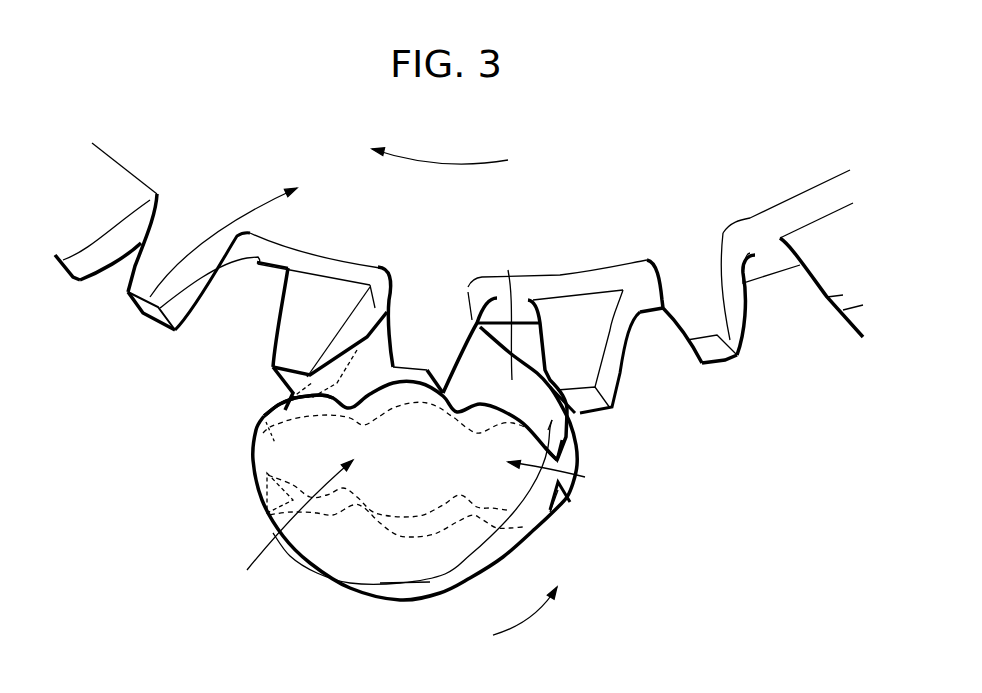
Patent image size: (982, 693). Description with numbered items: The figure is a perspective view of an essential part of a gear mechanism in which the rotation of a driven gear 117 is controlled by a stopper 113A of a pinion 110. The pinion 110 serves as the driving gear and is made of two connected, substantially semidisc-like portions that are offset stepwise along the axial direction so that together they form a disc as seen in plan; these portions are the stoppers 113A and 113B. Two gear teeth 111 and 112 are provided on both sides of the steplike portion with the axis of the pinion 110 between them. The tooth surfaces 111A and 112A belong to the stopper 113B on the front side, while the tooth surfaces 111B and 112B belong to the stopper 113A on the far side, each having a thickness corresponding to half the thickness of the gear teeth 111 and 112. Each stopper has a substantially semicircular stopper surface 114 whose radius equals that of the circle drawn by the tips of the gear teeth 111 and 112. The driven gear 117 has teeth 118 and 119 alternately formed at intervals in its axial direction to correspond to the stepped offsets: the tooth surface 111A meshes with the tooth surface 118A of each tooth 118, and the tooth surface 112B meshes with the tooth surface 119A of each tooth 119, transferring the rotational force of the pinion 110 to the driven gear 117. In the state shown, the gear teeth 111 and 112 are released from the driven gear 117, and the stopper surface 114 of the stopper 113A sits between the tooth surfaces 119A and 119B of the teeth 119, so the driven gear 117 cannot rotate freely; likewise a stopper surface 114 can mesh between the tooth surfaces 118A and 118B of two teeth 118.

The pinion 110 is at (245, 586).
The gear tooth 111 is at (560, 443).
The tooth surface 111A is at (512, 410).
The tooth surface 111B is at (551, 507).
The gear tooth 112 is at (260, 422).
The tooth surface 112A is at (277, 410).
The tooth surface 112B is at (255, 512).
The stopper 113A is at (550, 428).
The stopper 113B is at (407, 557).
The stopper surface 114 is at (340, 583).
The driven gear 117 is at (150, 297).
The tooth 118 is at (432, 307).
The tooth surface 118A is at (468, 307).
The tooth surface 118B is at (380, 298).
The tooth 119 is at (287, 342).
The tooth surface 119A is at (343, 330).
The tooth surface 119B is at (540, 340).